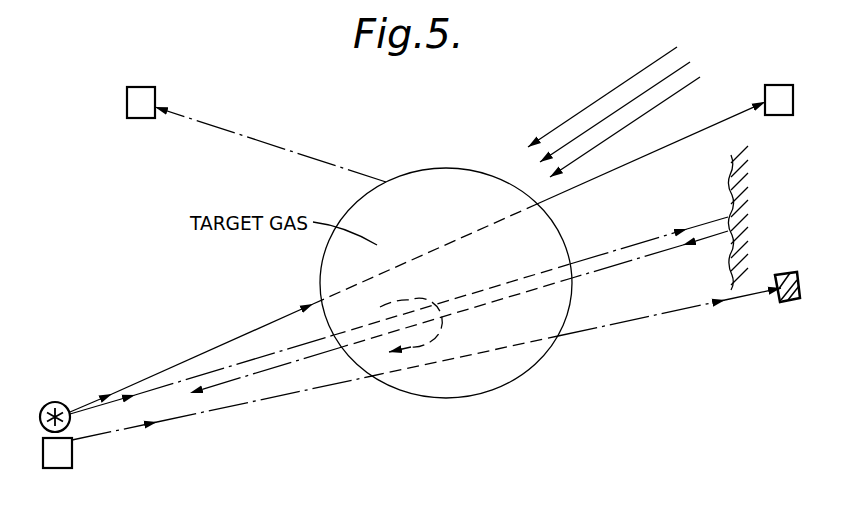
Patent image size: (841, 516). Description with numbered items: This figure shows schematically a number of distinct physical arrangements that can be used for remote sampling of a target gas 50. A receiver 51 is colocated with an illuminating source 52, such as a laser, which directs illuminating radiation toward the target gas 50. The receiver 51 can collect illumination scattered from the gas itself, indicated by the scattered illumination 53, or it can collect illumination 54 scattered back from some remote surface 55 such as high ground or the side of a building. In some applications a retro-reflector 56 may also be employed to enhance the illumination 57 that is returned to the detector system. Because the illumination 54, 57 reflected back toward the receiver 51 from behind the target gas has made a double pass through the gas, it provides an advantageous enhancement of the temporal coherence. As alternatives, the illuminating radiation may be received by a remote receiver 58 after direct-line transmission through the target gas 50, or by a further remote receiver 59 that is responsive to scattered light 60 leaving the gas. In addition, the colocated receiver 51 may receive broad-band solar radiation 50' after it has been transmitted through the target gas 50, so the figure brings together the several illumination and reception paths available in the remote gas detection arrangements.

The target gas 50 is at (446, 295).
The broad-band solar radiation 50' is at (614, 112).
The receiver 51 is at (65, 455).
The illuminating source 52 is at (68, 410).
The illumination scattered from the gas 53 is at (413, 345).
The illumination scattered from a remote surface 54 is at (649, 256).
The remote surface 55 is at (731, 197).
The retro-reflector 56 is at (790, 302).
The illumination from the retro-reflector 57 is at (670, 313).
The remote receiver 58 is at (774, 100).
The remote receiver 59 is at (140, 108).
The scattered light 60 is at (304, 155).